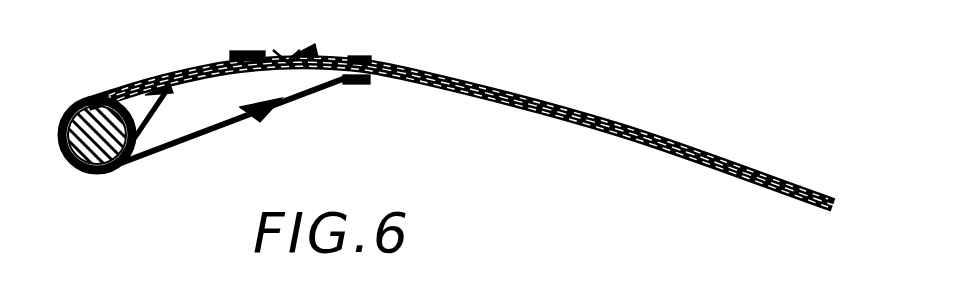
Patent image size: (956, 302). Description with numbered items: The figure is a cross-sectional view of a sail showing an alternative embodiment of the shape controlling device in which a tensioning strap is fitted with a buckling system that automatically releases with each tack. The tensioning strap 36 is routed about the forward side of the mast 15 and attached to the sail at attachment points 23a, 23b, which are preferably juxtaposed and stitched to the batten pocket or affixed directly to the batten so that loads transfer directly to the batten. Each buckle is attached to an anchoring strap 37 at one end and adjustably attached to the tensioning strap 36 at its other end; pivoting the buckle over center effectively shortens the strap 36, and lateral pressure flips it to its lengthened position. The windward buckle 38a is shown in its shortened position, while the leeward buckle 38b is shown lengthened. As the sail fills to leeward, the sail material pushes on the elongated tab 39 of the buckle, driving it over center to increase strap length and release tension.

The mast 15 is at (84, 170).
The tensioning strap 36 is at (178, 147).
The anchoring strap 37 is at (313, 89).
The windward buckle 38a is at (260, 121).
The leeward buckle 38b is at (274, 49).
The elongated tab 39 is at (240, 107).
The attachment point 23a is at (356, 85).
The attachment point 23b is at (360, 56).